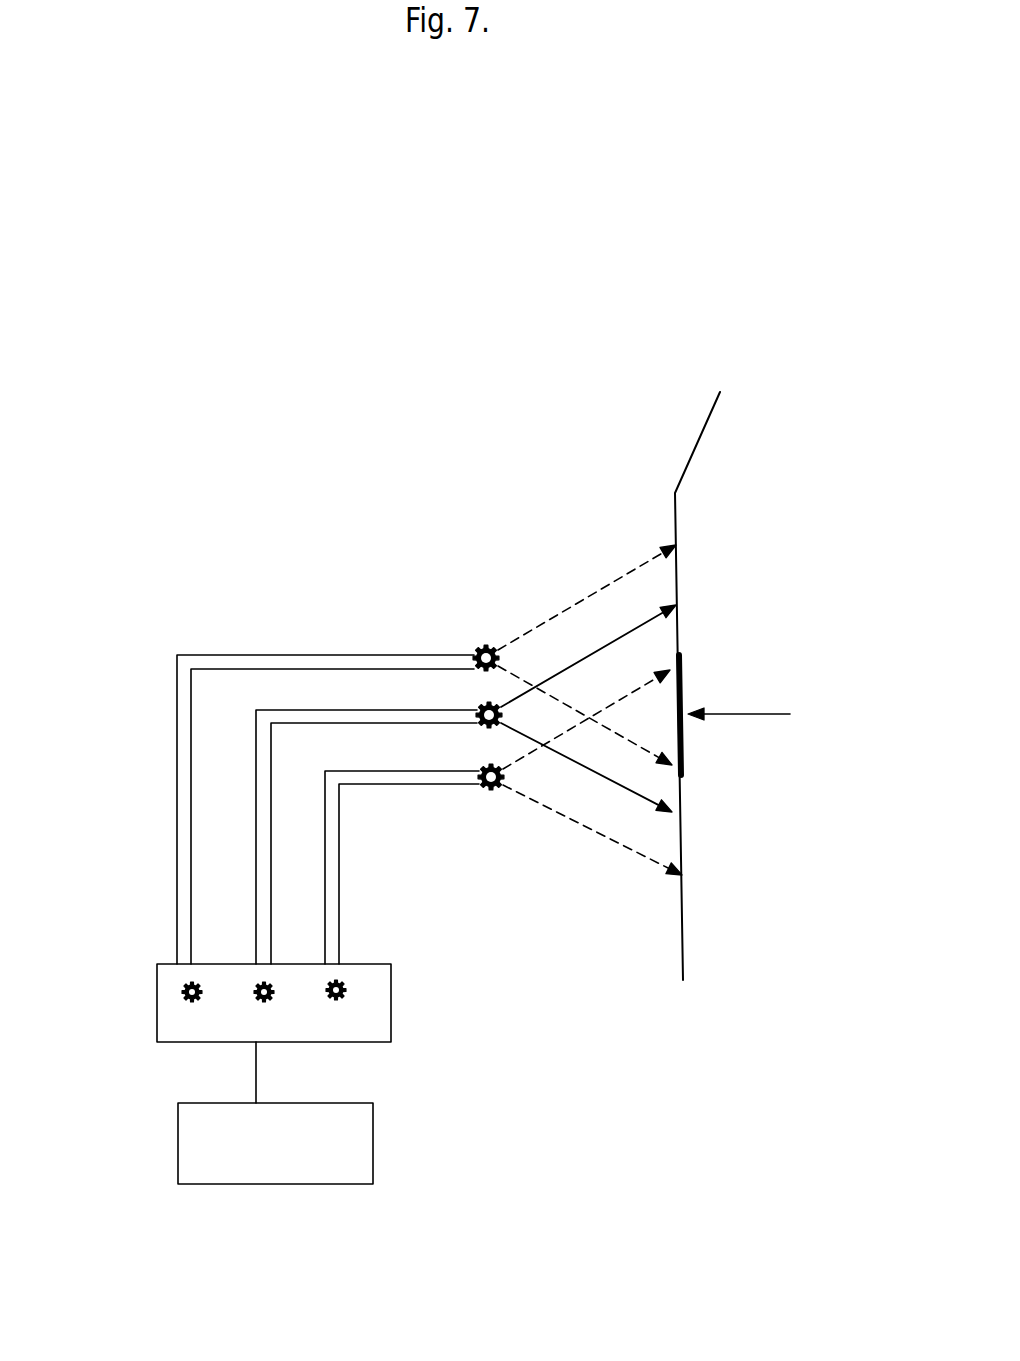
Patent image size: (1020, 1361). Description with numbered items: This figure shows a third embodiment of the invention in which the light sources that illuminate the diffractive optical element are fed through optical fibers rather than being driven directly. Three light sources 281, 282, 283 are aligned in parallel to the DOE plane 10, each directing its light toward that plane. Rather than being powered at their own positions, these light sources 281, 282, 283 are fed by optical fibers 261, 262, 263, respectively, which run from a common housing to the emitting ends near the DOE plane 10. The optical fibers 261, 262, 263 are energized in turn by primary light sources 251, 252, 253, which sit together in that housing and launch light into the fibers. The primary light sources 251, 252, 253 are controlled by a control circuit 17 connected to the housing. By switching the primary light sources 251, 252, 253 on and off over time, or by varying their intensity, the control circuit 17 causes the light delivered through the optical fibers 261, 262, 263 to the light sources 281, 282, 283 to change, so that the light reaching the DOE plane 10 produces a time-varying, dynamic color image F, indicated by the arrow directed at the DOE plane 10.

The DOE plane 10 is at (716, 655).
The dynamic color image F is at (765, 717).
The control circuit 17 is at (275, 1175).
The primary light source 251 is at (185, 1005).
The primary light source 252 is at (272, 1005).
The primary light source 253 is at (347, 995).
The optical fiber 261 is at (180, 732).
The optical fiber 262 is at (265, 882).
The optical fiber 263 is at (325, 817).
The light source 281 is at (487, 645).
The light source 282 is at (480, 709).
The light source 283 is at (492, 787).